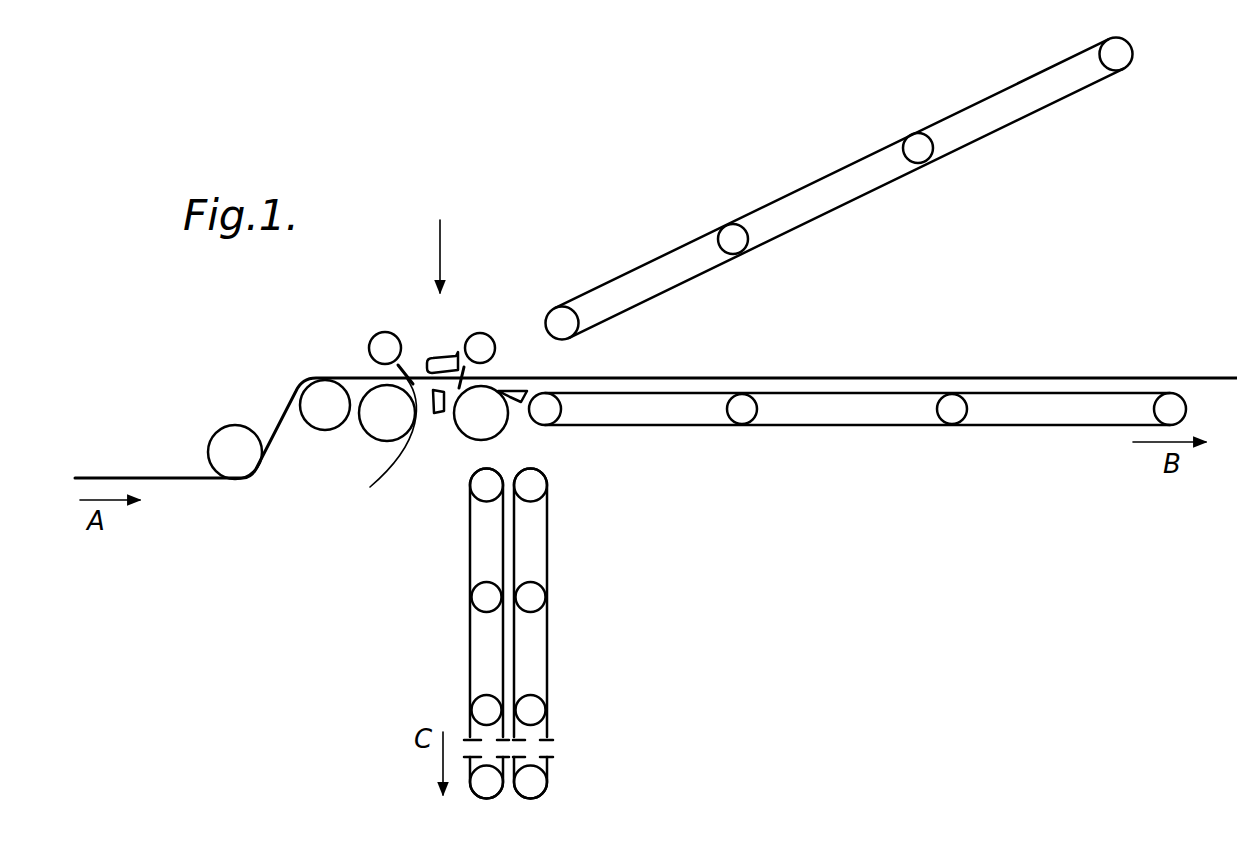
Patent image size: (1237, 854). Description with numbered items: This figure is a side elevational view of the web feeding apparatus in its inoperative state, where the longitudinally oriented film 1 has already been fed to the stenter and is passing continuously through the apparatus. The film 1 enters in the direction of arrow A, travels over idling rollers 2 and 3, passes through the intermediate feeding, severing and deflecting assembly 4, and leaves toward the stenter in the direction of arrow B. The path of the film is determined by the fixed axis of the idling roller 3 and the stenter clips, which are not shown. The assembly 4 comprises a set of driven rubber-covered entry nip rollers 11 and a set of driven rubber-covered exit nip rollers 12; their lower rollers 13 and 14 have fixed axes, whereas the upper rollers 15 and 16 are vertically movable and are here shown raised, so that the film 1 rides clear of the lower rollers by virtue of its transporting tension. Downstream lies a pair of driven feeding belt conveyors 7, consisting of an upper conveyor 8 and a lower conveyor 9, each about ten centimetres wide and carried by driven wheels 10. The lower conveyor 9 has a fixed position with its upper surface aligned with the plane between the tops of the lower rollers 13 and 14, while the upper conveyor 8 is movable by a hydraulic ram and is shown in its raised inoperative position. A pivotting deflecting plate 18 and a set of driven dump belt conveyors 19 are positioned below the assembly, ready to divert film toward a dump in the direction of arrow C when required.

The longitudinally oriented film 1 is at (143, 477).
The idling roller 2 is at (235, 435).
The idling roller 3 is at (318, 392).
The intermediate feeding, severing and deflecting assembly 4 is at (423, 256).
The pair of driven feeding belt conveyors 7 is at (857, 272).
The upper conveyor 8 is at (968, 103).
The lower conveyor 9 is at (1092, 428).
The driven wheels 10 is at (728, 231).
The entry nip rollers 11 is at (379, 446).
The exit nip rollers 12 is at (465, 370).
The lower roller 13 is at (370, 432).
The lower roller 14 is at (490, 423).
The upper roller 15 is at (383, 338).
The upper roller 16 is at (477, 340).
The pivotting deflecting plate 18 is at (520, 395).
The dump belt conveyors 19 is at (540, 556).